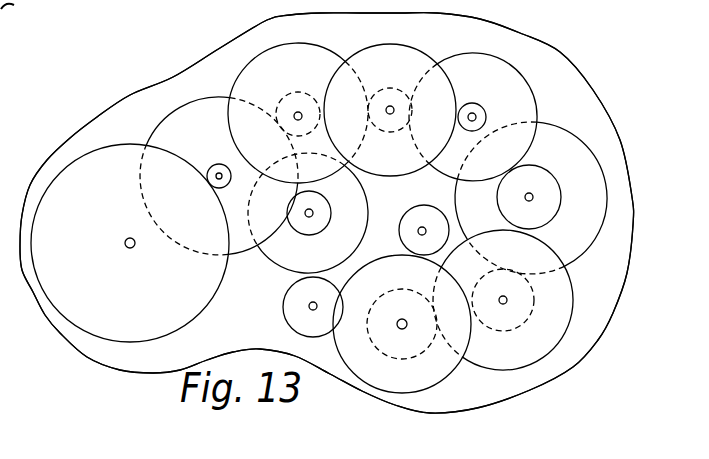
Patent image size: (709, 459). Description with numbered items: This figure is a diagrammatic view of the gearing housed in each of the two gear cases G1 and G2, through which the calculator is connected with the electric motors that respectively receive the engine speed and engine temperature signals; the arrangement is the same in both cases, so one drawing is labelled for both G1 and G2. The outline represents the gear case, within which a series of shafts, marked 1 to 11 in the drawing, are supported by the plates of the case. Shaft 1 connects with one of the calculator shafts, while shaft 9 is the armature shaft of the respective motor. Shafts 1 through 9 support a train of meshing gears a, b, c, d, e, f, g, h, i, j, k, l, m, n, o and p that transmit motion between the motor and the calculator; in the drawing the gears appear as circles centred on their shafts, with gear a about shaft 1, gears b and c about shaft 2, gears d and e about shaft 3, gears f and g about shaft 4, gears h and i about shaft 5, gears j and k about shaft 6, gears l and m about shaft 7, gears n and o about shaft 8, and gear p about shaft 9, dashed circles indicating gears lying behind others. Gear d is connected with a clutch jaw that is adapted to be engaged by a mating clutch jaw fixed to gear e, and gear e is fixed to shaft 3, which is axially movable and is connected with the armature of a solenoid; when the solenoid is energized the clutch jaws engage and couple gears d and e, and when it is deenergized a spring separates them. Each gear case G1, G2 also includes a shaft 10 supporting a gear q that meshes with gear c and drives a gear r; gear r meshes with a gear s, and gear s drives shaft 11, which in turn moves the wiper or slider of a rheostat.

The gear case G1 is at (351, 213).
The gear case G2 is at (351, 213).
The gear a is at (124, 142).
The shaft 1 is at (130, 238).
The gear b is at (224, 186).
The gear c is at (210, 96).
The shaft 2 is at (219, 172).
The gear d is at (299, 91).
The gear e is at (316, 45).
The shaft 3 is at (298, 109).
The gear f is at (394, 85).
The gear g is at (420, 48).
The shaft 4 is at (390, 103).
The gear h is at (481, 106).
The gear i is at (473, 116).
The shaft 5 is at (476, 117).
The gear j is at (552, 177).
The gear k is at (591, 157).
The shaft 6 is at (533, 196).
The gear l is at (532, 313).
The gear m is at (574, 298).
The shaft 7 is at (507, 300).
The gear n is at (420, 354).
The gear o is at (422, 396).
The shaft 8 is at (406, 325).
The gear p is at (428, 206).
The armature shaft 9 is at (427, 232).
The gear q is at (325, 226).
The gear r is at (281, 268).
The shaft 10 is at (313, 212).
The gear s is at (283, 309).
The shaft 11 is at (321, 295).